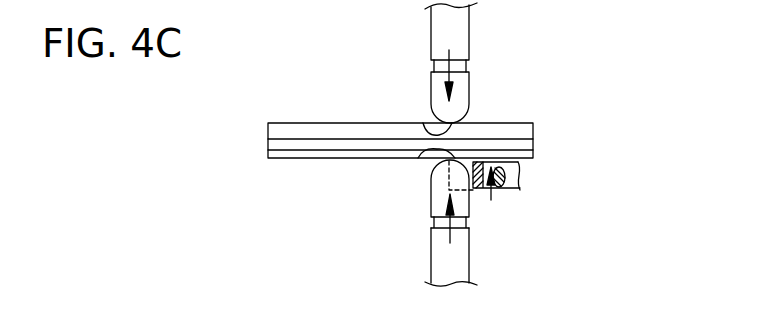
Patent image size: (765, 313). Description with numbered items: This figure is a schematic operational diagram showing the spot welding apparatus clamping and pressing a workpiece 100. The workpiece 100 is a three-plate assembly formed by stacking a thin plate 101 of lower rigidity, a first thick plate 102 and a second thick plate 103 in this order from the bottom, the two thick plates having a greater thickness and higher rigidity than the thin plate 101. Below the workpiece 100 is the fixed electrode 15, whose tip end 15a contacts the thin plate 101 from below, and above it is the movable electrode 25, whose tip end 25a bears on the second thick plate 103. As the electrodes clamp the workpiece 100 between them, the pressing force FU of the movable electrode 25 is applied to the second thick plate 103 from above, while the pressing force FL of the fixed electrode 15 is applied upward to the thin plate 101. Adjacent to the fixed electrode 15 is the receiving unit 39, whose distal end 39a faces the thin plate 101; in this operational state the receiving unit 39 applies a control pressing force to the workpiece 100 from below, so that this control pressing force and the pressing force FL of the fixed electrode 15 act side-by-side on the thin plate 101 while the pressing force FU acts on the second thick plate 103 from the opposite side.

The movable electrode 25 is at (431, 84).
The tip end of the movable electrode 25a is at (423, 124).
The pressing force of the movable electrode FU is at (466, 66).
The fixed electrode 15 is at (437, 192).
The tip end of the fixed electrode 15a is at (420, 161).
The pressing force of the fixed electrode FL is at (433, 238).
The workpiece 100 is at (321, 185).
The thin plate 101 is at (299, 156).
The first thick plate 102 is at (278, 147).
The second thick plate 103 is at (278, 131).
The receiving unit 39 is at (560, 172).
The distal end of the receiving unit 39a is at (478, 160).